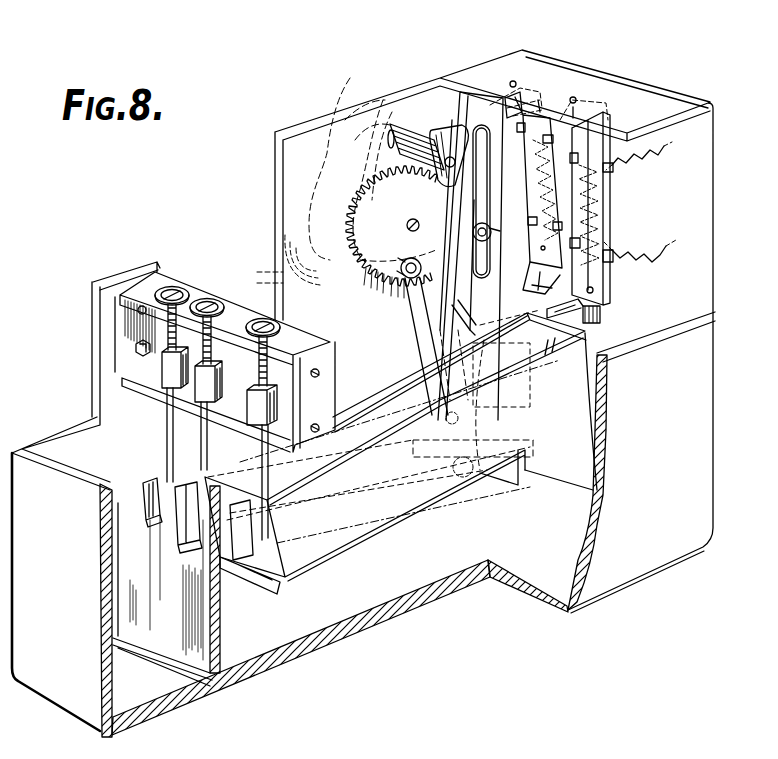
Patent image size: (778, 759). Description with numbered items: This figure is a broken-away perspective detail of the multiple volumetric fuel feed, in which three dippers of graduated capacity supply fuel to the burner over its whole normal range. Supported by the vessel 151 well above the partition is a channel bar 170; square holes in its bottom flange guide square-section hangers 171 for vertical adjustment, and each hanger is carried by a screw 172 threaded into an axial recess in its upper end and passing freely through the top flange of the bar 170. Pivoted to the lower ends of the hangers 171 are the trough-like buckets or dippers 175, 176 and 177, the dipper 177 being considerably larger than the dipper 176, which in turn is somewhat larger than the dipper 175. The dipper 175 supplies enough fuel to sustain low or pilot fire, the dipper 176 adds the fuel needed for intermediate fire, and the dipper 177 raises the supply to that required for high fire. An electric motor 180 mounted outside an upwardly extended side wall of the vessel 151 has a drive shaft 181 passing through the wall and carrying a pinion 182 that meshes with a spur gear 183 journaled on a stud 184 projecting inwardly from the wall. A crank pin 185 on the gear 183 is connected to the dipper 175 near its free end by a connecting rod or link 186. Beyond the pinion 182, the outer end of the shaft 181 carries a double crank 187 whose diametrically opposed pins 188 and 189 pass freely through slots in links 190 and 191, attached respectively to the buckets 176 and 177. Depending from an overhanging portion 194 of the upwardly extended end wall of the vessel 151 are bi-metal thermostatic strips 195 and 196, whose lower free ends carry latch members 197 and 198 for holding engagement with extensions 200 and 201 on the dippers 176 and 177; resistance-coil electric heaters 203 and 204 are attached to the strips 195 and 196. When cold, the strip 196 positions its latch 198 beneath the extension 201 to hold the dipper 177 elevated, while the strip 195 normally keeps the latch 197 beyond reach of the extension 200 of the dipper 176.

The vessel 151 is at (80, 443).
The channel bar 170 is at (306, 343).
The hangers 171 is at (256, 388).
The screws 172 is at (212, 348).
The dipper 175 is at (168, 500).
The dipper 176 is at (205, 540).
The dipper 177 is at (312, 542).
The electric motor 180 is at (324, 174).
The drive shaft 181 is at (394, 128).
The pinion 182 is at (418, 135).
The spur gear 183 is at (355, 284).
The stud 184 is at (399, 213).
The crank pin 185 is at (408, 293).
The connecting rod or link 186 is at (428, 350).
The double crank 187 is at (462, 105).
The crank pin 188 is at (514, 107).
The crank pin 189 is at (492, 232).
The connecting rod or link 190 is at (496, 268).
The connecting rod or link 191 is at (470, 298).
The overhanging portion 194 is at (628, 105).
The thermostatic element or bi-metal strip 195 is at (516, 205).
The thermostatic element or bi-metal strip 196 is at (606, 205).
The latch member 197 is at (540, 294).
The latch member 198 is at (602, 318).
The extension 200 is at (529, 358).
The extension 201 is at (580, 326).
The electric heater 203 is at (586, 207).
The electric heater 204 is at (606, 186).